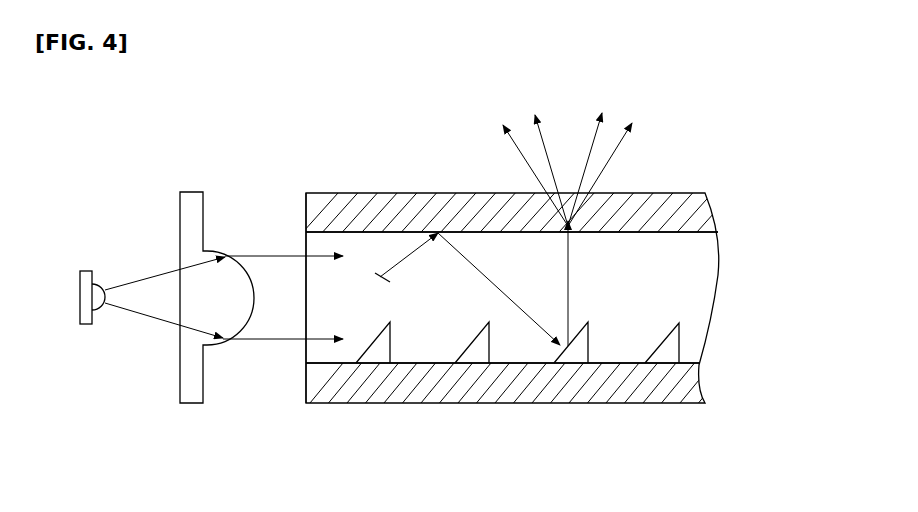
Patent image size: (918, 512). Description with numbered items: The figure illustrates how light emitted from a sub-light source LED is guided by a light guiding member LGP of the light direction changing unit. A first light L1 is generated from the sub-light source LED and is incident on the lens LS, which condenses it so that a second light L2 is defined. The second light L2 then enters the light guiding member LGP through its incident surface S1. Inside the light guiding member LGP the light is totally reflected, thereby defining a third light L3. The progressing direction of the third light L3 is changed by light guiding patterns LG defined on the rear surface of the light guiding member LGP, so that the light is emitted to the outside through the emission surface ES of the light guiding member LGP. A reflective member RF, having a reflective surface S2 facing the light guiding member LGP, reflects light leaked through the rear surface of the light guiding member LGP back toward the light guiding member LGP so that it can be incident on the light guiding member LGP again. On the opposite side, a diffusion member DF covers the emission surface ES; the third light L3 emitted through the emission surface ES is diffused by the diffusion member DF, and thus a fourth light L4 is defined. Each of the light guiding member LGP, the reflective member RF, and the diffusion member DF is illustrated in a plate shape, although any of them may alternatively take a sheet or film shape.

The sub-light source LED is at (87, 325).
The lens LS is at (213, 250).
The first light L1 is at (165, 322).
The second light L2 is at (283, 339).
The third light L3 is at (573, 278).
The fourth light L4 is at (603, 168).
The light guiding member LGP is at (678, 279).
The diffusion member DF is at (683, 203).
The reflective member RF is at (677, 377).
The incident surface S1 is at (305, 242).
The reflective surface S2 is at (477, 364).
The emission surface ES is at (375, 231).
The light guiding pattern LG is at (392, 342).